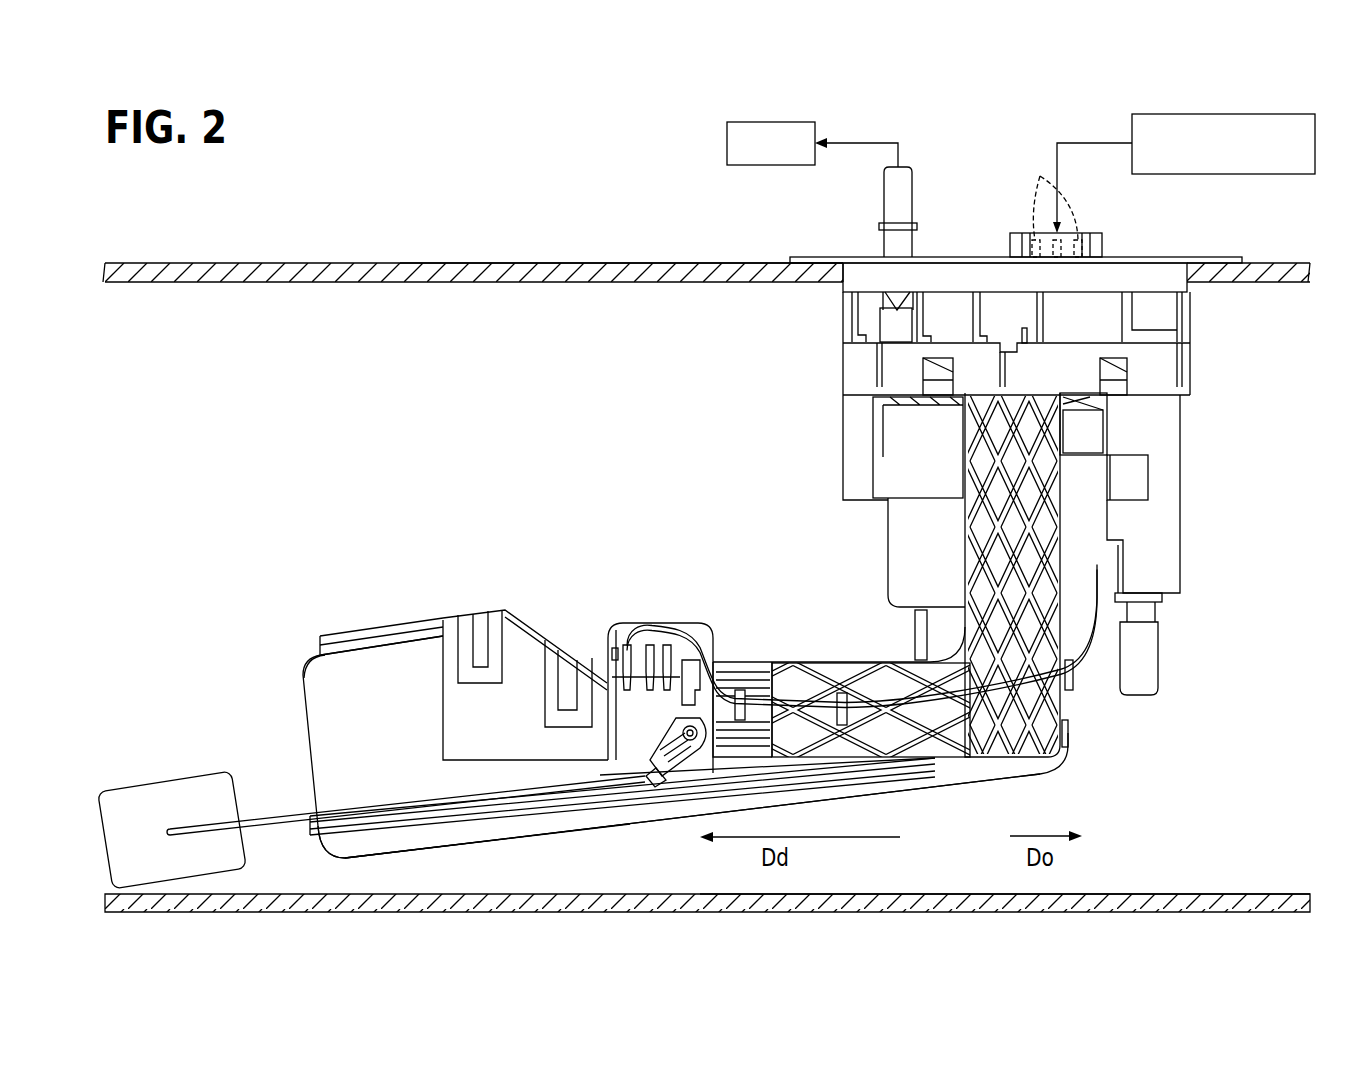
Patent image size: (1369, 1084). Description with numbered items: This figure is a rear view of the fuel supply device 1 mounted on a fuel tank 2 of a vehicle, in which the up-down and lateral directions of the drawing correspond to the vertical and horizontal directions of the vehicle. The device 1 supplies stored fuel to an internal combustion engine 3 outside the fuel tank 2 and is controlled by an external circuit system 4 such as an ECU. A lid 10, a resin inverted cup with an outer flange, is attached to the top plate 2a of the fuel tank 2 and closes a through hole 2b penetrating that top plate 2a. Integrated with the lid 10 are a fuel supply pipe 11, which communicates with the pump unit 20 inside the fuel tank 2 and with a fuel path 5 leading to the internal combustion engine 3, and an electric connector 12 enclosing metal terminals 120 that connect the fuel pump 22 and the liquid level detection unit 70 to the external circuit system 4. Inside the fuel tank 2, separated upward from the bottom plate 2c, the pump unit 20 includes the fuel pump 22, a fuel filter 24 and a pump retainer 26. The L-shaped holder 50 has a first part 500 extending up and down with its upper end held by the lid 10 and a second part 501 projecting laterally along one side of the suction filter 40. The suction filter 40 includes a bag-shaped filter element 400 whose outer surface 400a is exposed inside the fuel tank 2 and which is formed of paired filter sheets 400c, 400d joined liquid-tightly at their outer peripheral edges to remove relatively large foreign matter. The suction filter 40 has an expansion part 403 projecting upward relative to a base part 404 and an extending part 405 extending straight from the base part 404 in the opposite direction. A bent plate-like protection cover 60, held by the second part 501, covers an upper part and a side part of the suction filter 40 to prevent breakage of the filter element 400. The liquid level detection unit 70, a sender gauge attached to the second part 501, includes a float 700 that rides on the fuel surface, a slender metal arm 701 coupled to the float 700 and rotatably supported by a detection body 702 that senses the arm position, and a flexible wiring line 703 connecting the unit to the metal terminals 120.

The fuel supply device 1 is at (1214, 374).
The fuel tank 2 is at (1273, 262).
The top plate 2a is at (727, 263).
The through hole 2b is at (855, 270).
The bottom plate 2c is at (1228, 895).
The internal combustion engine 3 is at (727, 148).
The external circuit system 4 is at (1132, 117).
The fuel path 5 is at (893, 157).
The lid 10 is at (1215, 257).
The fuel supply pipe 11 is at (883, 213).
The electric connector 12 is at (1020, 233).
The metal terminals 120 is at (1075, 200).
The pump unit 20 is at (872, 435).
The fuel pump 22 is at (948, 624).
The fuel filter 24 is at (888, 525).
The pump retainer 26 is at (918, 646).
The suction filter 40 is at (292, 664).
The L-shaped holder 50 is at (1076, 751).
The protection cover 60 is at (397, 619).
The liquid level detection unit 70 is at (686, 616).
The filter element 400 is at (572, 847).
The outer surface 400a is at (305, 656).
The filter sheet 400c is at (485, 780).
The filter sheet 400d is at (470, 835).
The expansion part 403 is at (365, 656).
The base part 404 is at (975, 775).
The extending part 405 is at (1070, 730).
The first part 500 is at (1160, 625).
The second part 501 is at (893, 766).
The float 700 is at (182, 778).
The arm 701 is at (272, 825).
The detection body 702 is at (640, 645).
The flexible wiring line 703 is at (692, 628).